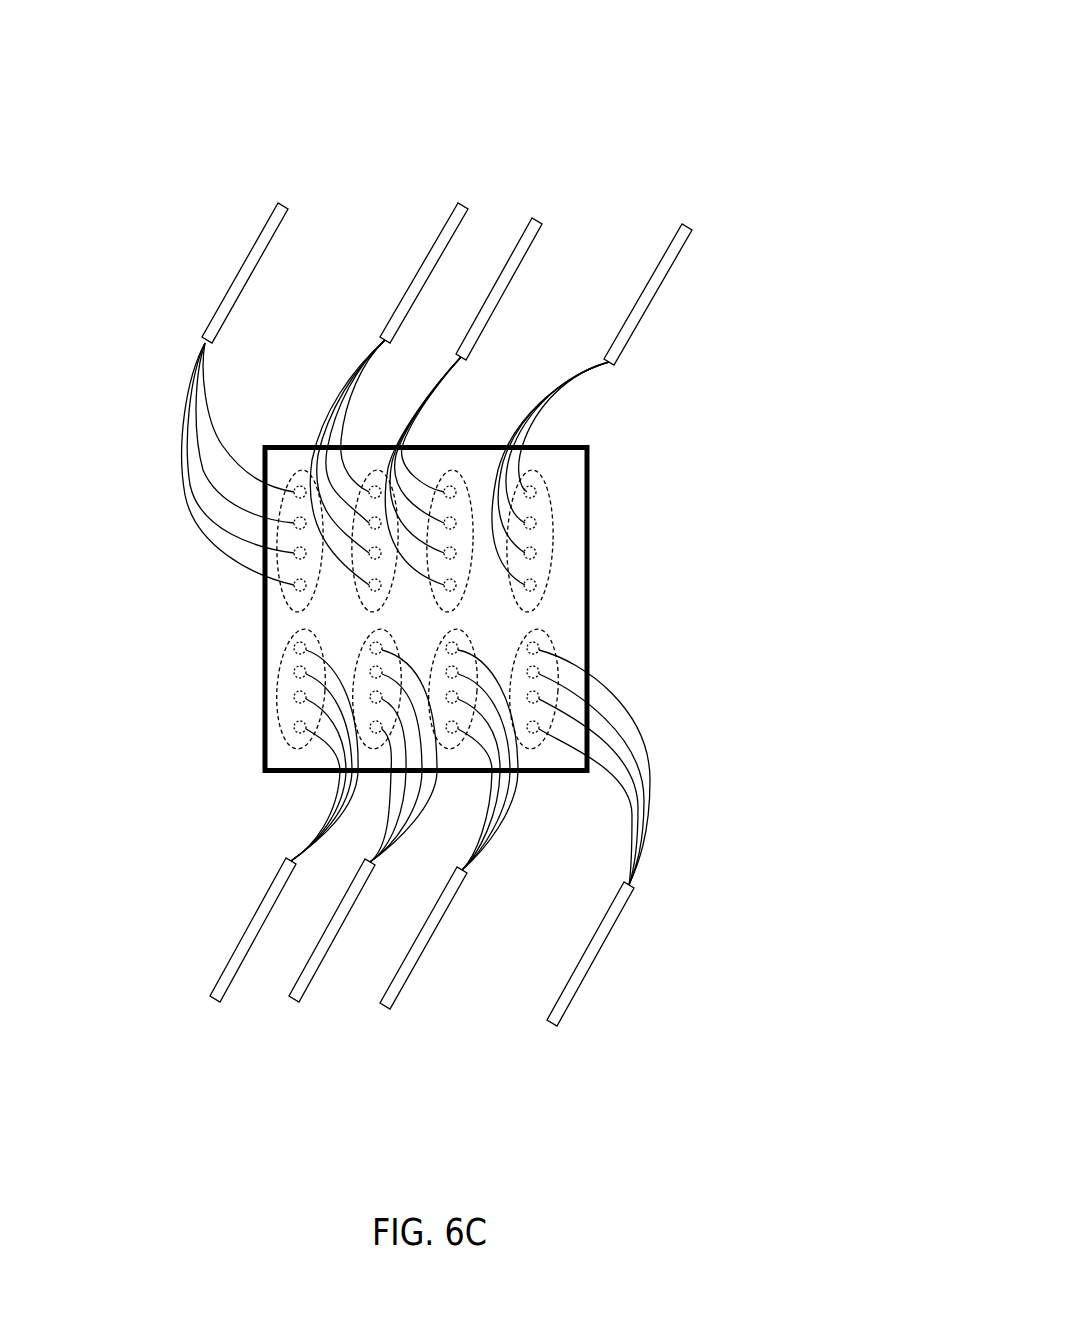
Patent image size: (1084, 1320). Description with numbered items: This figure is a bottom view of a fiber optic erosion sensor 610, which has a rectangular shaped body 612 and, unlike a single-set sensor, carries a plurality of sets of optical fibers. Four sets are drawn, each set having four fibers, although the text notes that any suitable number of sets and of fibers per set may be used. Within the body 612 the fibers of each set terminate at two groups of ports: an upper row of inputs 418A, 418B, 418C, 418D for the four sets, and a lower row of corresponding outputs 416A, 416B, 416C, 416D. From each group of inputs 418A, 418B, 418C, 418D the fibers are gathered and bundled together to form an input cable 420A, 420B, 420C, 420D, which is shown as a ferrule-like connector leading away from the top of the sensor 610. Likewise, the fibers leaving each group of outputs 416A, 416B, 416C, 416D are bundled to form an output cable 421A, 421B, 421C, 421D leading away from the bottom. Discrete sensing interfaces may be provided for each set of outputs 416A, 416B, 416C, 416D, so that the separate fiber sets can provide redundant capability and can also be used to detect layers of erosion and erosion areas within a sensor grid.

The fiber optic erosion sensor 610 is at (770, 122).
The substrate 612 is at (628, 475).
The outputs 416A is at (235, 773).
The outputs 416B is at (215, 618).
The outputs 416C is at (615, 562).
The outputs 416D is at (625, 618).
The inputs 418A is at (281, 455).
The inputs 418B is at (400, 400).
The inputs 418C is at (487, 410).
The inputs 418D is at (632, 400).
The cable 420A is at (183, 209).
The cable 420B is at (342, 180).
The cable 420C is at (505, 140).
The cable 420D is at (617, 160).
The cable 421A is at (150, 1028).
The cable 421B is at (233, 1020).
The cable 421C is at (330, 1020).
The cable 421D is at (497, 1037).